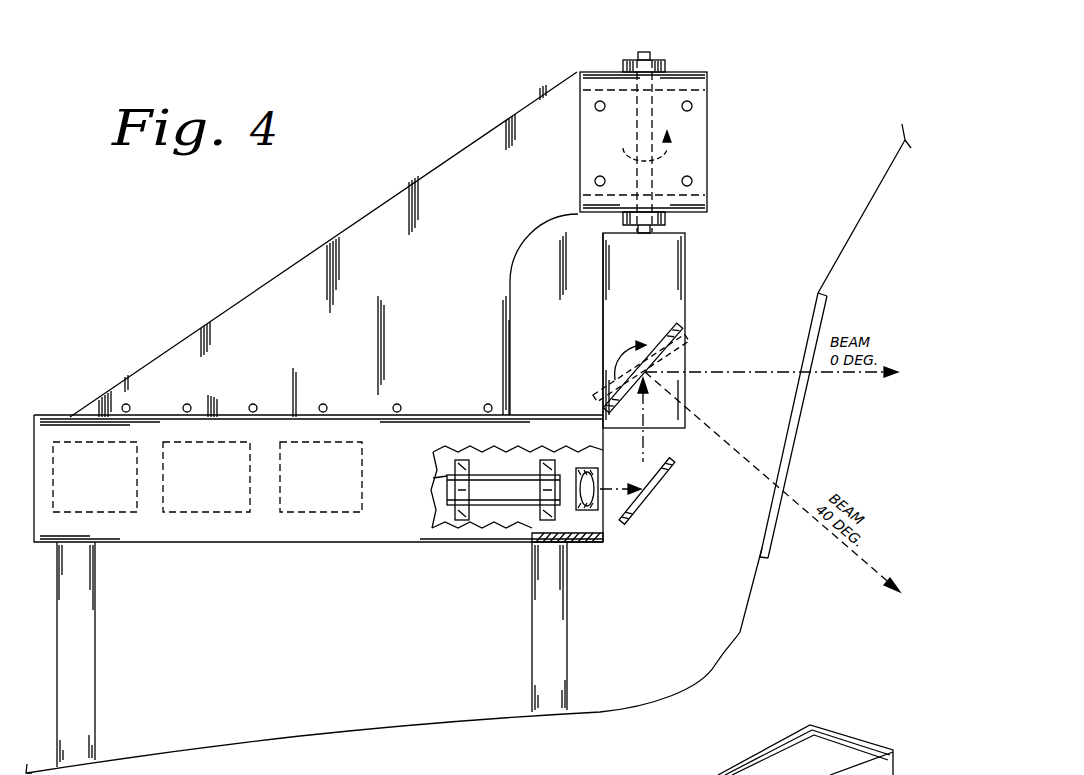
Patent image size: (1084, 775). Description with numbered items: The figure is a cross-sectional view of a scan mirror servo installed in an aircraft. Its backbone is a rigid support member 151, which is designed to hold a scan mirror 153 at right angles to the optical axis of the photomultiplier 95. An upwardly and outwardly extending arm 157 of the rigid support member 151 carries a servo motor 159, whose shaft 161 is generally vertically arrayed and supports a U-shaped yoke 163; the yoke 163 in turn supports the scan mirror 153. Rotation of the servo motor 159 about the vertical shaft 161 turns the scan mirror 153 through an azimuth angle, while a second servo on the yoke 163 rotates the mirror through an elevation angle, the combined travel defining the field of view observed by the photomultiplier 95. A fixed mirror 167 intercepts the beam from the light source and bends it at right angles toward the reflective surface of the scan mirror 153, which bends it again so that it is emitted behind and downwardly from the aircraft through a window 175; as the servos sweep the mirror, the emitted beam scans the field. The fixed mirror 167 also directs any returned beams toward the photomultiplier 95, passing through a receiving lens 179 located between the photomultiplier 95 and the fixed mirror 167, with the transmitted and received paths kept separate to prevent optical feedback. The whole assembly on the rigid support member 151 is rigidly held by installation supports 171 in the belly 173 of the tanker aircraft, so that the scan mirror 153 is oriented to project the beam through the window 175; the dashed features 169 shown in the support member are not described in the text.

The photomultiplier 95 is at (492, 485).
The rigid support member 151 is at (393, 212).
The scan mirror 153 is at (668, 330).
The upwardly and outwardly extending arm 157 is at (566, 100).
The servo motor 159 is at (667, 66).
The shaft 161 is at (644, 51).
The U-shaped yoke 163 is at (666, 253).
The fixed mirror 167 is at (661, 479).
The mounting openings 169 is at (127, 448).
The rigid installation supports 171 is at (75, 692).
The belly 173 is at (322, 730).
The window 175 is at (798, 412).
The receiving lens 179 is at (594, 512).